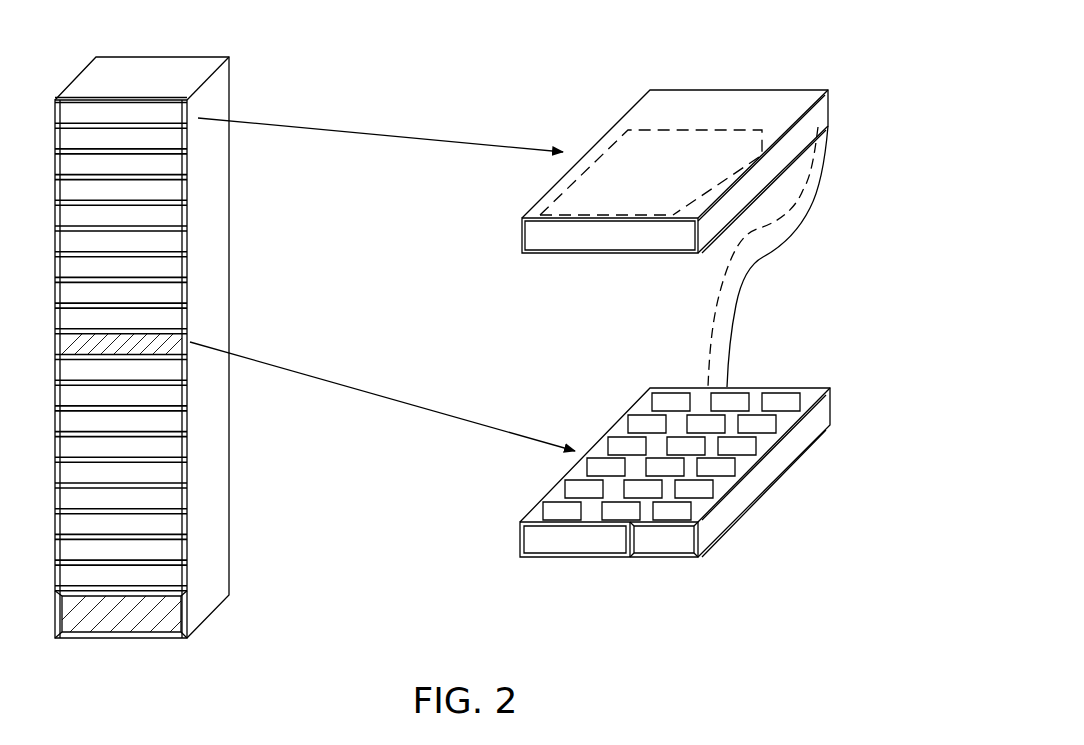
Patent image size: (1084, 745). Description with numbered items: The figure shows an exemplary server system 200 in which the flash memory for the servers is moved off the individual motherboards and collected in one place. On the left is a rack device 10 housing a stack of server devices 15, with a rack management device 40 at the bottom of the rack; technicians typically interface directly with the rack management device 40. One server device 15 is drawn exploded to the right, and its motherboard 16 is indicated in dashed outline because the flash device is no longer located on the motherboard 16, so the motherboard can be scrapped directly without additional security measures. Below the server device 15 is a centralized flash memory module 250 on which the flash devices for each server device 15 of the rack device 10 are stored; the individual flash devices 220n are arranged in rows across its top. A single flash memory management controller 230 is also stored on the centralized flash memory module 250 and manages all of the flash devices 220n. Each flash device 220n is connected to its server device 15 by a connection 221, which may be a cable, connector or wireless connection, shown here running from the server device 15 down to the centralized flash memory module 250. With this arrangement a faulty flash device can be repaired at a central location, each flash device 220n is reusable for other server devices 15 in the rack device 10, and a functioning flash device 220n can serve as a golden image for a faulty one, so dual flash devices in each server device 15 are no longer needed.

The rack device 10 is at (229, 83).
The server device 15 is at (173, 292).
The motherboard 16 is at (675, 138).
The rack management device 40 is at (170, 622).
The server system 200 is at (749, 37).
The connection 221 is at (758, 263).
The centralized flash memory module 250 is at (830, 391).
The flash device 220n is at (735, 468).
The flash memory management controller 230 is at (658, 557).